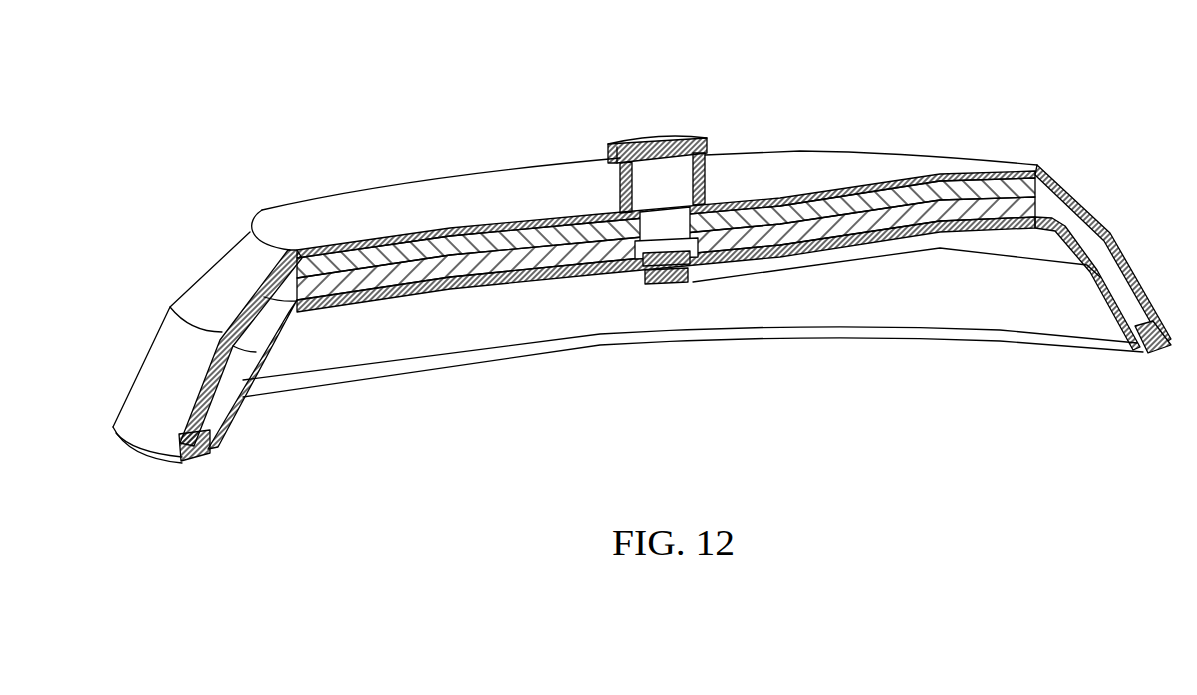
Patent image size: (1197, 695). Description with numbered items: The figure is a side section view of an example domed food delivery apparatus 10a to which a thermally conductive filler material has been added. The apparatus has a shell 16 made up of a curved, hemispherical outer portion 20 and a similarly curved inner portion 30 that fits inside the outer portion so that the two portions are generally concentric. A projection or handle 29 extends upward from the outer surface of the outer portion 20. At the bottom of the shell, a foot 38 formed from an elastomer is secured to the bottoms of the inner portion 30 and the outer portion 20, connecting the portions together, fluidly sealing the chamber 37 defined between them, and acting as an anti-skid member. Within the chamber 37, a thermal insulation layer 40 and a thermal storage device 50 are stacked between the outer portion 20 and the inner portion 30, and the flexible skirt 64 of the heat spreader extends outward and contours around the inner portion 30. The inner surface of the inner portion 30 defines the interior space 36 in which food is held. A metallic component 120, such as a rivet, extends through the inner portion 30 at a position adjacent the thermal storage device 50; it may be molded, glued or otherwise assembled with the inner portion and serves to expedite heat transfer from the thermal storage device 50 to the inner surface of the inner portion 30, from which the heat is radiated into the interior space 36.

The food delivery apparatus 10a is at (652, 251).
The shell 16 is at (207, 337).
The outer portion 20 is at (461, 158).
The handle 29 is at (707, 141).
The inner portion 30 is at (1091, 300).
The interior space 36 is at (978, 318).
The chamber 37 is at (1138, 289).
The foot 38 is at (1160, 352).
The thermal insulation layer 40 is at (537, 245).
The thermal storage device 50 is at (447, 277).
The flexible skirt 64 is at (215, 398).
The metallic component 120 is at (666, 283).